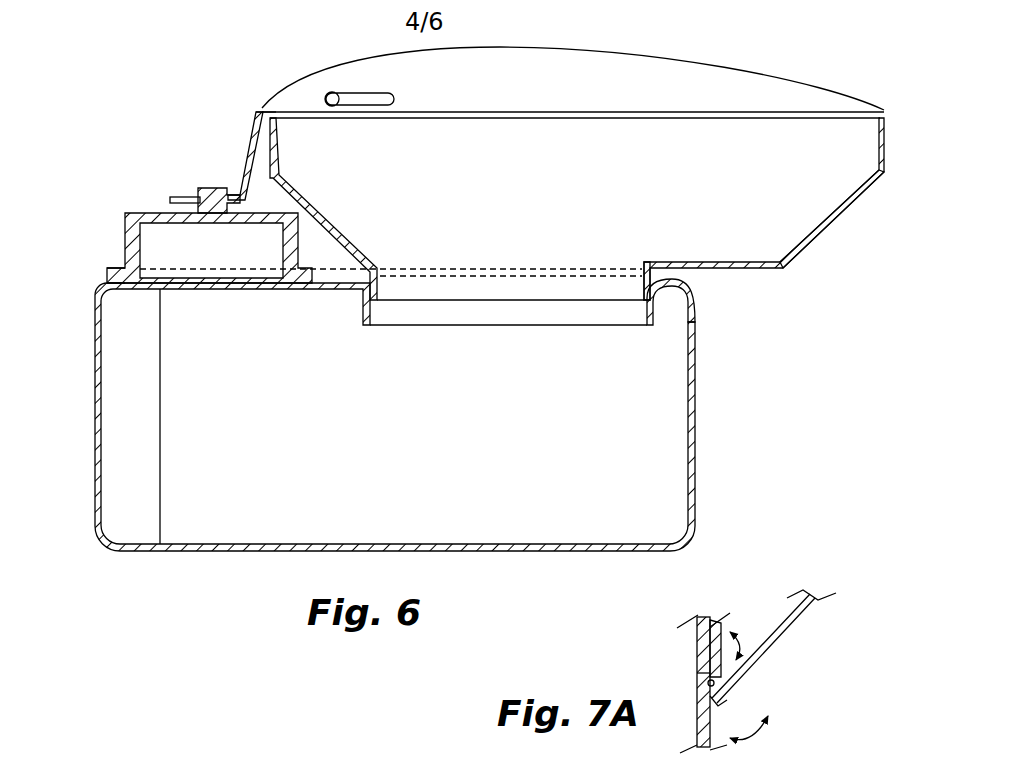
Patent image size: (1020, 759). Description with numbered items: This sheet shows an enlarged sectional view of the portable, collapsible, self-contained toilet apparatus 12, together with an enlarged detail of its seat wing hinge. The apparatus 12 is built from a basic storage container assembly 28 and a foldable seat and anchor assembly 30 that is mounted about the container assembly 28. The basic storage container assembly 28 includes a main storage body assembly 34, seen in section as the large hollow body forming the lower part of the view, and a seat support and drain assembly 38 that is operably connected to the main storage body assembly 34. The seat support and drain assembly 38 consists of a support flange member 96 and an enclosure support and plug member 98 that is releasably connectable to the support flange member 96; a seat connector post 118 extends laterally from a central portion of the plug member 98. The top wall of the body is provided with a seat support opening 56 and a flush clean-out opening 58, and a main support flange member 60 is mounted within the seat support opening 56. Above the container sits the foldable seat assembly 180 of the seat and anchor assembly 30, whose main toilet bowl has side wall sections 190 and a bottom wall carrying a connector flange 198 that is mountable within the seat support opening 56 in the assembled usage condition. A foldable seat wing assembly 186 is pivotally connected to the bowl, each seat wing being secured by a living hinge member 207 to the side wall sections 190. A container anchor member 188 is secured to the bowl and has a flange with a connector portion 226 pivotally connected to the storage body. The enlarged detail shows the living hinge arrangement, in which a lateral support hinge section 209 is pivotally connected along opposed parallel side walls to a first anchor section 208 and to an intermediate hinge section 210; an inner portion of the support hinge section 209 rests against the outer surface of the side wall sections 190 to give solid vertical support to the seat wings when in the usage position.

In FIG. 6, the portable, collapsible, self-contained toilet apparatus 12 is at (518, 192).
In FIG. 6, the basic storage container assembly 28 is at (413, 415).
In FIG. 6, the foldable seat and anchor assembly 30 is at (888, 143).
In FIG. 6, the main storage body assembly 34 is at (92, 472).
In FIG. 6, the seat support and drain assembly 38 is at (127, 245).
In FIG. 6, the seat support opening 56 is at (657, 283).
In FIG. 6, the flush clean-out opening 58 is at (140, 283).
In FIG. 6, the main support flange member 60 is at (652, 302).
In FIG. 6, the support flange member 96 is at (125, 257).
In FIG. 6, the enclosure support and plug member 98 is at (178, 217).
In FIG. 6, the seat connector post 118 is at (215, 190).
In FIG. 6, the foldable seat assembly 180 is at (853, 200).
In FIG. 6, the foldable seat wing assembly 186 is at (548, 73).
In FIG. 6, the container anchor member 188 is at (247, 150).
In FIG. 7A, the side wall sections 190 is at (697, 660).
In FIG. 6, the connector flange 198 is at (378, 287).
In FIG. 6, the living hinge member 207 is at (420, 110).
In FIG. 7A, the first anchor section 208 is at (721, 623).
In FIG. 7A, the lateral support hinge section 209 is at (698, 673).
In FIG. 7A, the intermediate hinge section 210 is at (767, 663).
In FIG. 6, the connector portion 226 is at (258, 112).